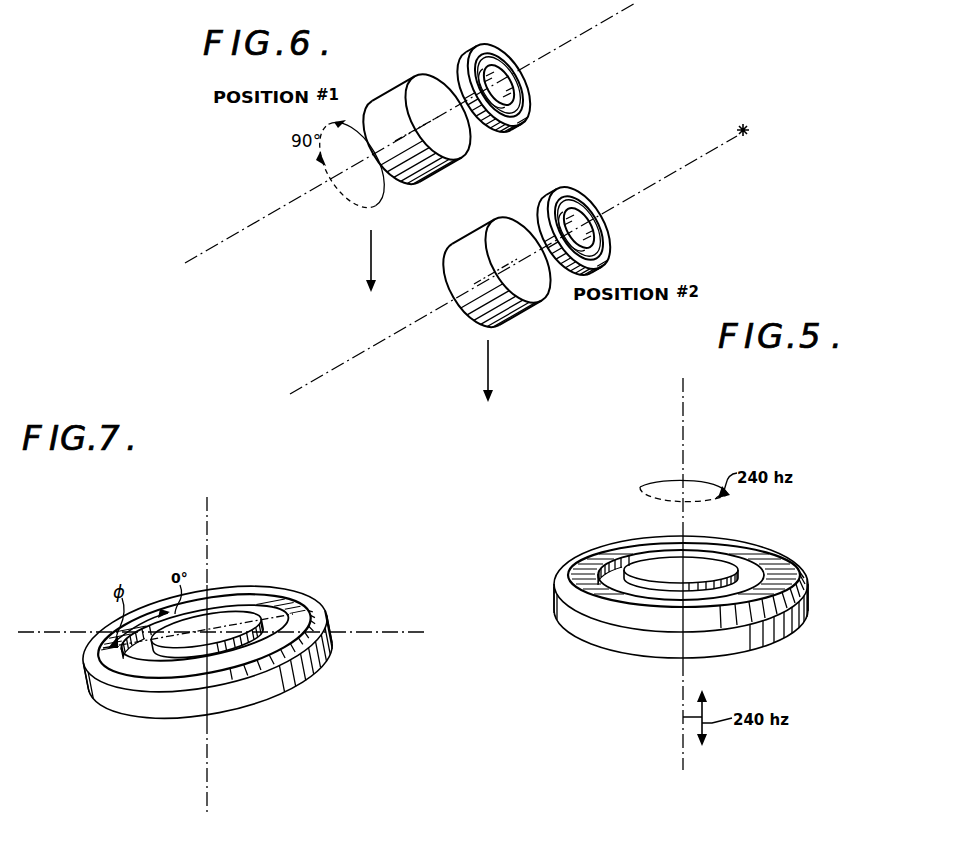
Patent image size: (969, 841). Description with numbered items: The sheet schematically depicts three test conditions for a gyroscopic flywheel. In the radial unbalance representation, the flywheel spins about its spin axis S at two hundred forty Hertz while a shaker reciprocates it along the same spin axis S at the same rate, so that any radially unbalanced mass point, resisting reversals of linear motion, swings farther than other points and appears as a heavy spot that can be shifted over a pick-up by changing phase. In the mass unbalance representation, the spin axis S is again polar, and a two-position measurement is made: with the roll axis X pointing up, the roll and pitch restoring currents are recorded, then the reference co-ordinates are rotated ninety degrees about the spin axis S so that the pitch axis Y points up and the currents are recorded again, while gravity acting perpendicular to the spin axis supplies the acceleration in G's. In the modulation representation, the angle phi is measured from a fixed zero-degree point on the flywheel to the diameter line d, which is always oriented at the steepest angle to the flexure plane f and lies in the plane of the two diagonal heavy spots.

In FIG. 6, the spin axis S is at (577, 38).
In FIG. 5, the spin axis S is at (683, 392).
In FIG. 7, the spin axis S is at (205, 643).
In FIG. 6, the acceleration in G's G is at (428, 331).
In FIG. 6, the roll axis X is at (493, 181).
In FIG. 6, the pitch axis Y is at (456, 199).
In FIG. 5, the diameter line d is at (681, 597).
In FIG. 7, the diameter line d is at (285, 601).
In FIG. 7, the flexure plane f is at (227, 632).